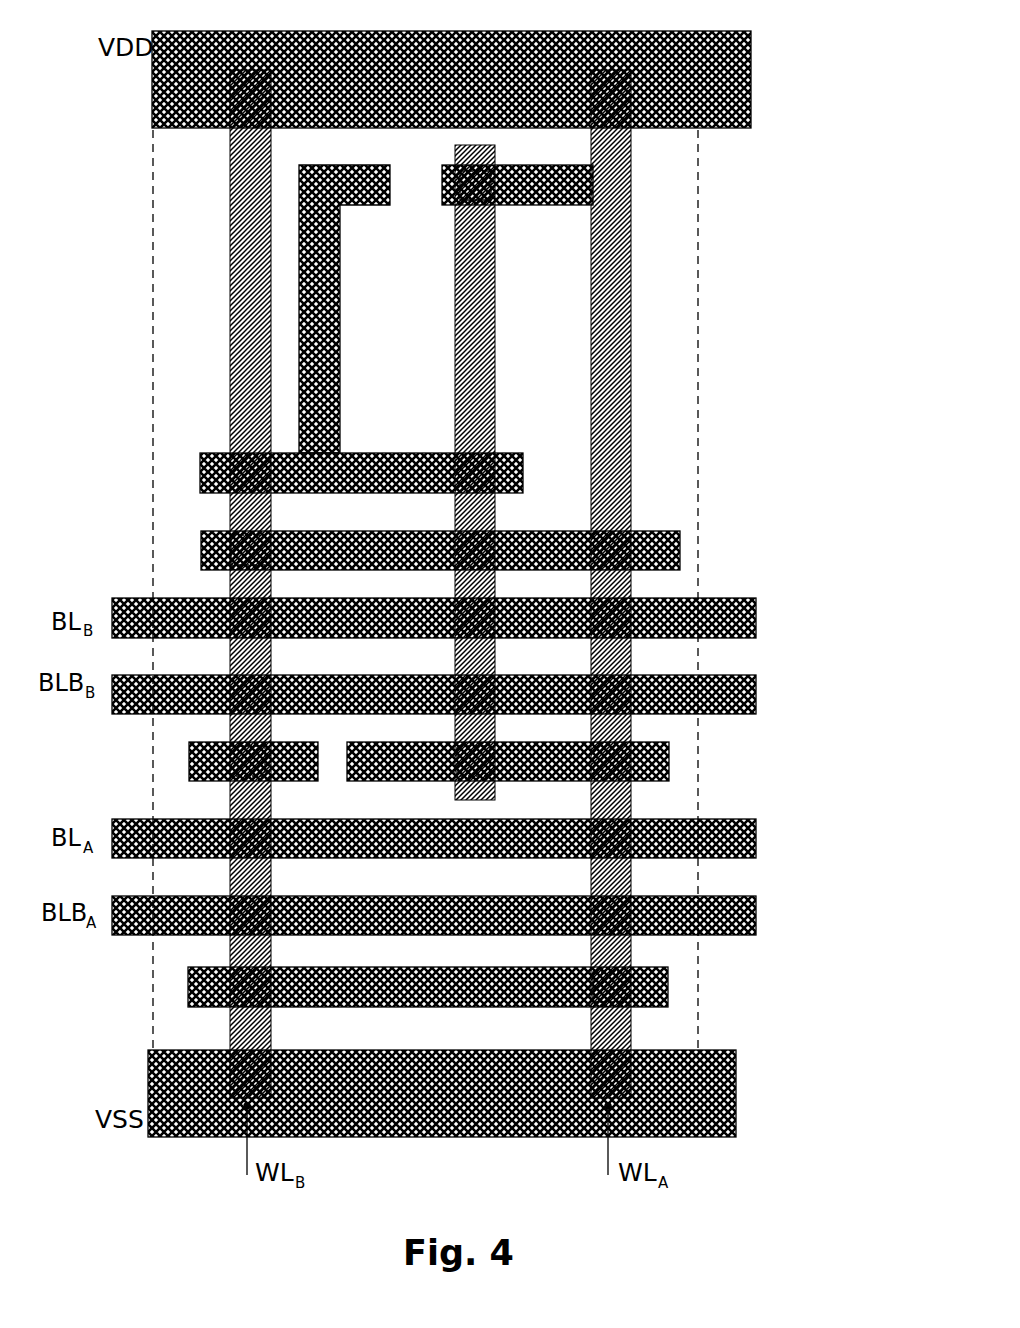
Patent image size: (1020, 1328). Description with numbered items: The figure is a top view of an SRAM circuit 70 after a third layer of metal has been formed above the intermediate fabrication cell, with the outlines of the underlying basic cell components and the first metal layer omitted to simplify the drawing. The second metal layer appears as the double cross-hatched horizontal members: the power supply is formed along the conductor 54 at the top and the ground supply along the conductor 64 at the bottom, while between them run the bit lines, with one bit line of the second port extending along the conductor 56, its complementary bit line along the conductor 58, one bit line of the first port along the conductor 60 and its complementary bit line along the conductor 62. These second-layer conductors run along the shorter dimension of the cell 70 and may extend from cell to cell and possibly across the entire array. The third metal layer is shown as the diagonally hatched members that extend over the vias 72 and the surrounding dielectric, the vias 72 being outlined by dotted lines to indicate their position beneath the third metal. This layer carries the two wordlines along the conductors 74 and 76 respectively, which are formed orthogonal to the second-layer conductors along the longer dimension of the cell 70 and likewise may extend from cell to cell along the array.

The conductor 54 is at (739, 77).
The conductor 56 is at (752, 605).
The conductor 58 is at (752, 680).
The conductor 60 is at (752, 827).
The conductor 62 is at (752, 903).
The conductor 64 is at (725, 1042).
The SRAM circuit 70 is at (839, 46).
The vias 72 is at (233, 540).
The conductor 74 is at (253, 310).
The conductor 76 is at (595, 303).